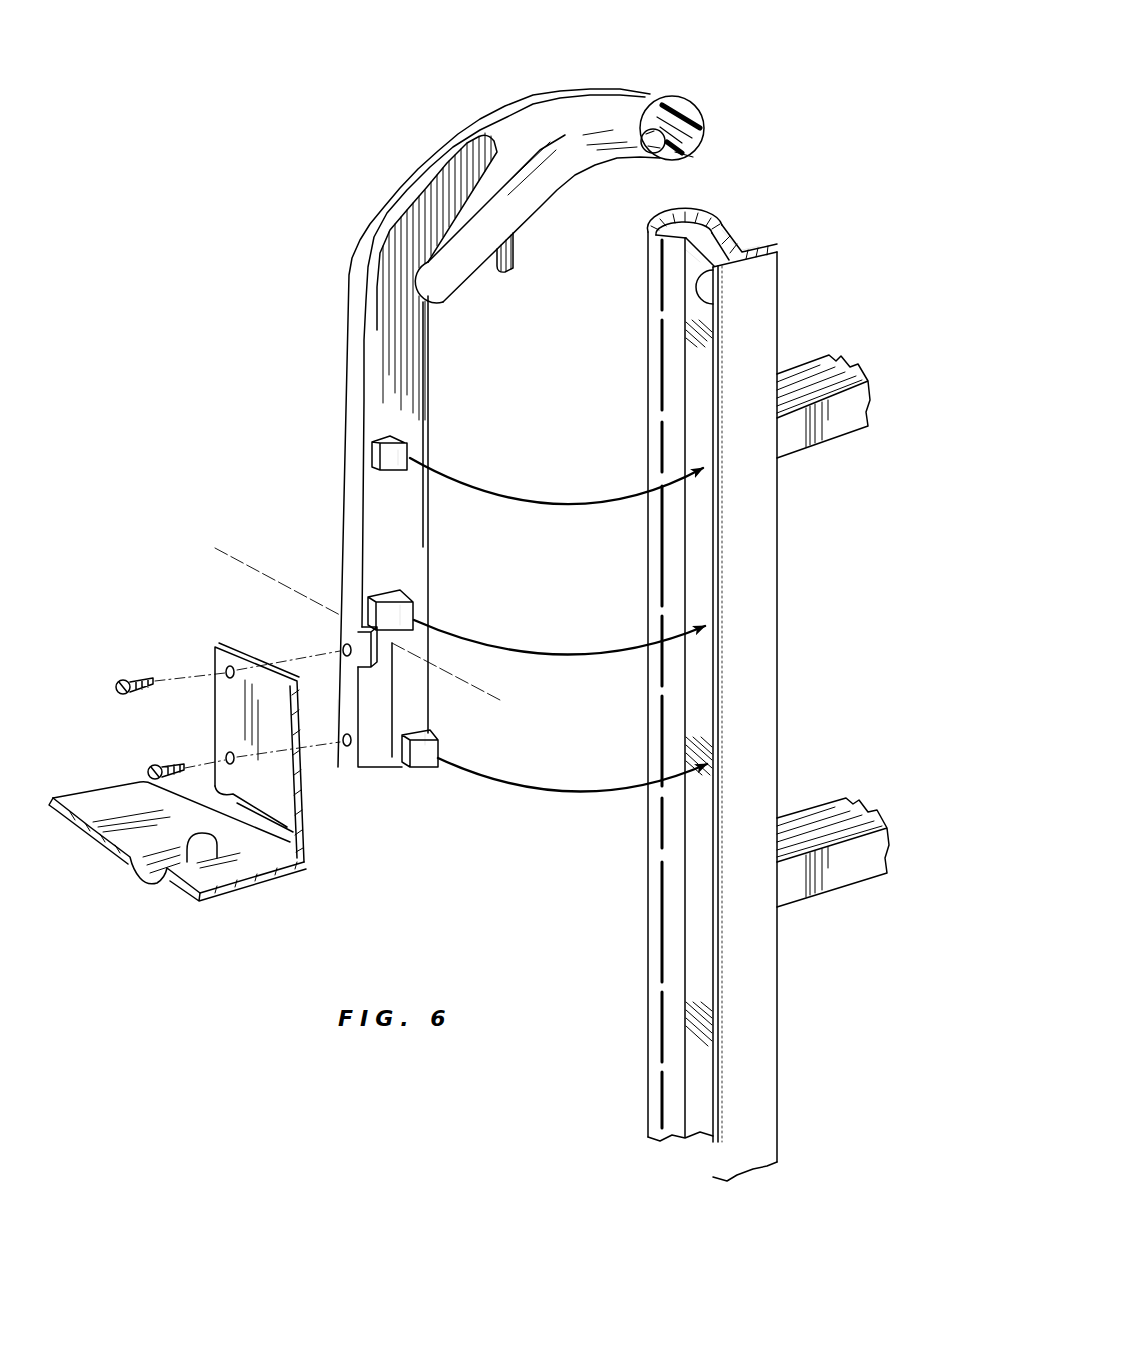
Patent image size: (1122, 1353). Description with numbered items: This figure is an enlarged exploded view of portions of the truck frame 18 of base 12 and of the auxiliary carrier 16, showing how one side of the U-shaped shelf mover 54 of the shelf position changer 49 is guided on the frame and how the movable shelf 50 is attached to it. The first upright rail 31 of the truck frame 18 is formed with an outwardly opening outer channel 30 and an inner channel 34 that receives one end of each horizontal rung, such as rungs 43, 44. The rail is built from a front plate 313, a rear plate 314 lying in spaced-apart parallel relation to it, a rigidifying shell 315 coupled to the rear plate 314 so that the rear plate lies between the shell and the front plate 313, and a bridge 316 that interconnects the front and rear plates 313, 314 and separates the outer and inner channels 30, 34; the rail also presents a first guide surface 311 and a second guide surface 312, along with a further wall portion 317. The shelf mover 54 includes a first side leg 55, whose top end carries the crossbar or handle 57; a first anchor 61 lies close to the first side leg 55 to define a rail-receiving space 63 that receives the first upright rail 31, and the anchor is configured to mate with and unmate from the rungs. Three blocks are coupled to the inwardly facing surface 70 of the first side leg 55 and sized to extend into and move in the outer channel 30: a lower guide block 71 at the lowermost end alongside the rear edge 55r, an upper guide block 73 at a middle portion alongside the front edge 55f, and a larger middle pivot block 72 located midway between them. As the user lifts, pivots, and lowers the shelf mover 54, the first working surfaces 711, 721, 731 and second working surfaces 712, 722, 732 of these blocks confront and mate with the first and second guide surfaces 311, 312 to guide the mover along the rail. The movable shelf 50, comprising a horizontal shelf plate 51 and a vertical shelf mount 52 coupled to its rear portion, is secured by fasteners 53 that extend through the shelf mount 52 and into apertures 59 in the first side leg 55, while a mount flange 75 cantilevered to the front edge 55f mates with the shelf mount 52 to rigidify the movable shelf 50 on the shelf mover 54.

The base 12 is at (630, 1008).
The auxiliary carrier 16 is at (347, 207).
The truck frame 18 is at (647, 926).
The outer channel 30 is at (698, 413).
The first upright rail 31 is at (752, 717).
The first guide surface 311 is at (720, 303).
The second guide surface 312 is at (672, 260).
The front plate 313 is at (778, 243).
The rear plate 314 is at (689, 214).
The rigidifying shell 315 is at (656, 214).
The bridge 316 is at (729, 242).
The channel wall 317 is at (698, 252).
The inner channel 34 is at (744, 236).
The rung 43 is at (801, 433).
The rung 44 is at (808, 880).
The shelf position changer 49 is at (408, 158).
The movable shelf 50 is at (104, 754).
The horizontal shelf plate 51 is at (247, 853).
The vertical shelf mount 52 is at (262, 683).
The fasteners 53 is at (140, 678).
The shelf mover 54 is at (343, 317).
The first side leg 55 is at (352, 524).
The front edge 55f is at (357, 447).
The rear edge 55r is at (432, 705).
The crossbar 57 is at (641, 110).
The mounting holes 59 is at (340, 647).
The first anchor 61 is at (462, 273).
The rail-receiving space 63 is at (458, 182).
The inwardly facing surface 70 is at (402, 523).
The lower guide block 71 is at (430, 752).
The first working surface 711 is at (400, 752).
The second working surface 712 is at (440, 742).
The middle pivot block 72 is at (413, 603).
The first working surface 721 is at (370, 607).
The second working surface 722 is at (415, 612).
The upper guide block 73 is at (407, 450).
The first working surface 731 is at (372, 458).
The second working surface 732 is at (410, 455).
The mount flange 75 is at (347, 637).